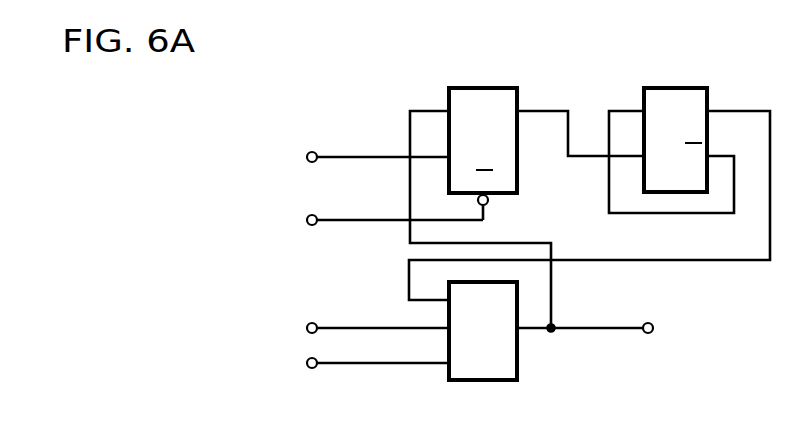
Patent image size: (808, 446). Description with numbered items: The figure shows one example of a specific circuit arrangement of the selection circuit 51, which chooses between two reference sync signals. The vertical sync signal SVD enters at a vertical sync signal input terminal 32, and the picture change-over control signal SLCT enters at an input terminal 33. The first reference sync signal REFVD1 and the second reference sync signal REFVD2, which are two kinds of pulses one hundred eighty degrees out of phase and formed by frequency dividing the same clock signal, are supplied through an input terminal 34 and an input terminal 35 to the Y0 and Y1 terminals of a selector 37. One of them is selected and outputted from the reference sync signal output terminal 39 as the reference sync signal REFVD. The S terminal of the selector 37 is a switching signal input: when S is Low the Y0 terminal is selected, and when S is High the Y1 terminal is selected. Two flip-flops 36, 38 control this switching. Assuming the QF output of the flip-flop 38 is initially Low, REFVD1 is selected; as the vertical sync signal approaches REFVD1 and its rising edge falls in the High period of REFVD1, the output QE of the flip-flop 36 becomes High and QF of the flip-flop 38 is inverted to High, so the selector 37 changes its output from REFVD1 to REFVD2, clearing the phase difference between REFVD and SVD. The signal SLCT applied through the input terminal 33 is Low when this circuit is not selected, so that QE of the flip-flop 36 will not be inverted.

The selection circuit 51 is at (242, 113).
The vertical sync signal input terminal 32 is at (312, 152).
The input terminal for picture change-over control signal 33 is at (316, 216).
The input terminal for first reference sync signal 34 is at (312, 323).
The input terminal for second reference sync signal 35 is at (312, 368).
The flip-flop 36 is at (484, 88).
The selector 37 is at (483, 380).
The flip-flop 38 is at (672, 88).
The output terminal for reference sync signals 39 is at (648, 333).